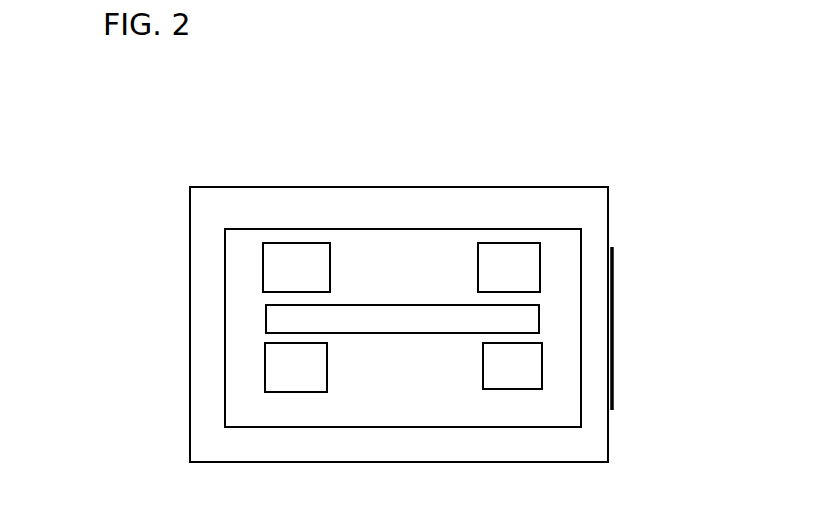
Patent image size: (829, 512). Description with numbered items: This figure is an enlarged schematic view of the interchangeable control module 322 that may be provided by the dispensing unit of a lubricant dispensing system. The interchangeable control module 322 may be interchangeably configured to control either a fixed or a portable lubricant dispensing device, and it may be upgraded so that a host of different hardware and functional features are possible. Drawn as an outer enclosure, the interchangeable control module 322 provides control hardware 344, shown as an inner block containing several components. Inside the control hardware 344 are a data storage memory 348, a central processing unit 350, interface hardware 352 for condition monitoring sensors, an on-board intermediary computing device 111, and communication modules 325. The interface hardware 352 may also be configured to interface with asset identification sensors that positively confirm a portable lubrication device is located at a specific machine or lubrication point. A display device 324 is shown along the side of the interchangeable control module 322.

The interchangeable control module 322 is at (590, 177).
The control hardware 344 is at (227, 262).
The display device 324 is at (613, 327).
The interface hardware 352 is at (290, 258).
The communication modules 325 is at (515, 266).
The central processing unit 350 is at (278, 317).
The data storage memory 348 is at (297, 373).
The on-board intermediary computing device 111 is at (513, 367).